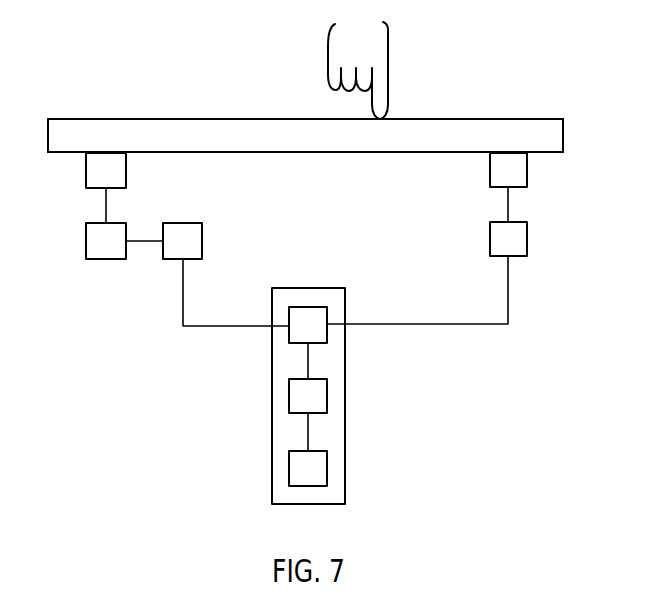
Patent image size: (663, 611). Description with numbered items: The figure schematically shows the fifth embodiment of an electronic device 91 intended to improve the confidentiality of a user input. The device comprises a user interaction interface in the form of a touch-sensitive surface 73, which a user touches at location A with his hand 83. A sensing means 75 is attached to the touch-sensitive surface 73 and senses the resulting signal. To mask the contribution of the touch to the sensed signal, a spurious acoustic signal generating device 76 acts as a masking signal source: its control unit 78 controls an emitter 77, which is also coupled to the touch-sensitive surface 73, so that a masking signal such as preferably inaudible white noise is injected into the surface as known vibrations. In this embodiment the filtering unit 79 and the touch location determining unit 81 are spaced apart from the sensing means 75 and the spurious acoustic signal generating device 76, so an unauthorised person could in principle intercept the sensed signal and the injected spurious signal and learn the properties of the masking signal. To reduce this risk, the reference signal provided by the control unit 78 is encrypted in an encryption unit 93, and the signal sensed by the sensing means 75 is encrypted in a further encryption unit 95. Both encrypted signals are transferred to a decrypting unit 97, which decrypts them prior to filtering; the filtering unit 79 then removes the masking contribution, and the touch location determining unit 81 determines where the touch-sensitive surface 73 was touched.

The electronic device 91 is at (208, 88).
The touch-sensitive surface 73 is at (508, 123).
The hand 83 is at (328, 50).
The location A is at (385, 113).
The sensing means 75 is at (527, 167).
The emitter 77 is at (86, 167).
The control unit 78 is at (86, 241).
The spurious acoustic signal generating device 76 is at (76, 243).
The encryption unit 93 is at (202, 241).
The encryption unit 95 is at (527, 240).
The decrypting unit 97 is at (327, 332).
The filtering unit 79 is at (327, 396).
The touch location determining unit 81 is at (327, 469).